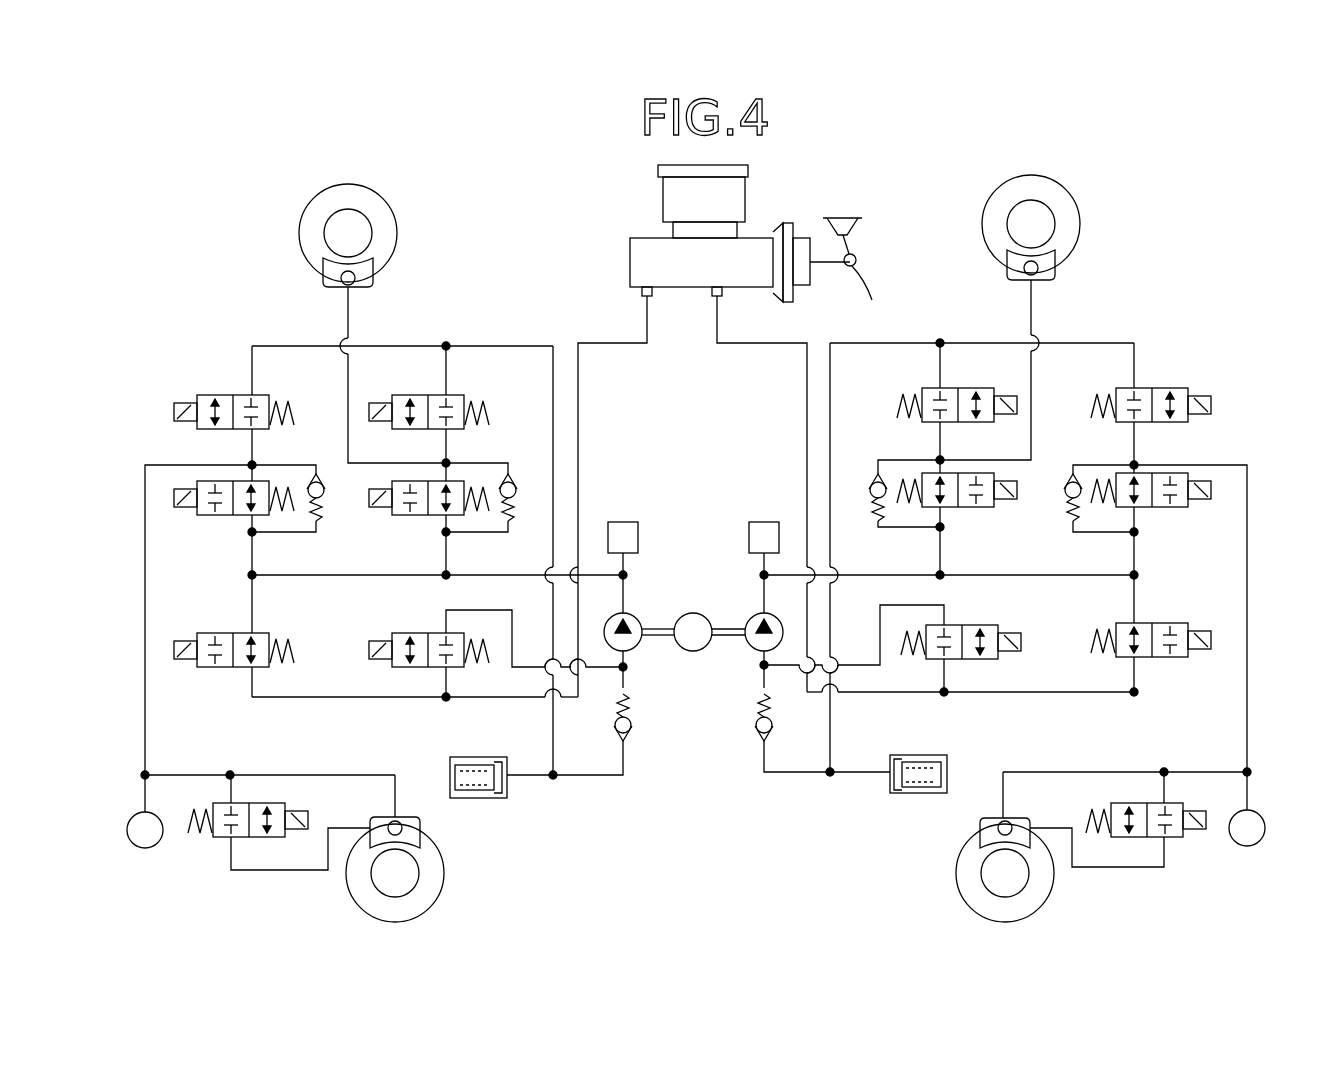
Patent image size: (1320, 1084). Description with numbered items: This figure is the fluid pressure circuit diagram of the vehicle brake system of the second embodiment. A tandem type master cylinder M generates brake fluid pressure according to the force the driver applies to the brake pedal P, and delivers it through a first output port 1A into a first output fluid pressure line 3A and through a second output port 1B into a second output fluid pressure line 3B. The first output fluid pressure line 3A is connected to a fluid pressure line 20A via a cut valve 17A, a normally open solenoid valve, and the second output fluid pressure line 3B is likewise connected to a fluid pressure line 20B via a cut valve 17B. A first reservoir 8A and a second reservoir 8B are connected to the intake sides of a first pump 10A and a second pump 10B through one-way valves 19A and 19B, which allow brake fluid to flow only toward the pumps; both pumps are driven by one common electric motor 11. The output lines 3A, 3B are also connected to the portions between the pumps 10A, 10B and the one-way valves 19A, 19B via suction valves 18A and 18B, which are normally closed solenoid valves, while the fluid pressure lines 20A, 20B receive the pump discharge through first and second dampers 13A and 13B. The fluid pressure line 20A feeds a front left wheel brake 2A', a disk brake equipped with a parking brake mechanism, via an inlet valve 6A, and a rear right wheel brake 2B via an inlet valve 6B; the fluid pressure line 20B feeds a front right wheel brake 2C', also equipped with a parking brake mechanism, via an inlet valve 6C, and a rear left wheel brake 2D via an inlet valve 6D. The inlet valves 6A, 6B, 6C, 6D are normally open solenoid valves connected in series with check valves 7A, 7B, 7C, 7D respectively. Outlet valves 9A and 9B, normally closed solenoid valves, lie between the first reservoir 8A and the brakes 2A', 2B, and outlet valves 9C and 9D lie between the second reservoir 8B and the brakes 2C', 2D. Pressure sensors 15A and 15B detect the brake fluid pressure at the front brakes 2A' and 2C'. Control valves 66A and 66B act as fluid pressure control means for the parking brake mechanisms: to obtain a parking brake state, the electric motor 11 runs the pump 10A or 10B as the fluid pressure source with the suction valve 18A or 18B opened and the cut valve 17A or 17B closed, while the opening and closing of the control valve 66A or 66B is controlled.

The master cylinder M is at (640, 255).
The brake pedal P is at (873, 296).
The first output port 1A is at (645, 298).
The second output port 1B is at (722, 297).
The first output fluid pressure line 3A is at (590, 343).
The second output fluid pressure line 3B is at (786, 343).
The rear right wheel brake 2B is at (290, 226).
The rear left wheel brake 2D is at (1085, 220).
The front left wheel brake 2A' is at (440, 848).
The front right wheel brake 2C' is at (961, 847).
The outlet valve 9A is at (213, 395).
The outlet valve 9B is at (462, 395).
The outlet valve 9C is at (1160, 388).
The outlet valve 9D is at (955, 388).
The inlet valve 6A is at (227, 515).
The inlet valve 6B is at (420, 515).
The inlet valve 6C is at (1160, 507).
The inlet valve 6D is at (968, 507).
The check valve 7A is at (330, 490).
The check valve 7B is at (522, 490).
The check valve 7C is at (1064, 490).
The check valve 7D is at (868, 490).
The first damper 13A is at (623, 522).
The second damper 13B is at (750, 540).
The fluid pressure line 20A is at (455, 577).
The fluid pressure line 20B is at (1060, 575).
The cut valve 17A is at (228, 667).
The cut valve 17B is at (1160, 657).
The suction valve 18A is at (410, 633).
The suction valve 18B is at (965, 625).
The first pump 10A is at (633, 641).
The second pump 10B is at (752, 643).
The electric motor 11 is at (693, 651).
The one-way valve 19A is at (633, 733).
The one-way valve 19B is at (760, 712).
The first reservoir 8A is at (445, 752).
The second reservoir 8B is at (922, 749).
The pressure sensor 15A is at (142, 852).
The pressure sensor 15B is at (1250, 848).
The control valve 66A is at (216, 838).
The control valve 66B is at (1175, 838).